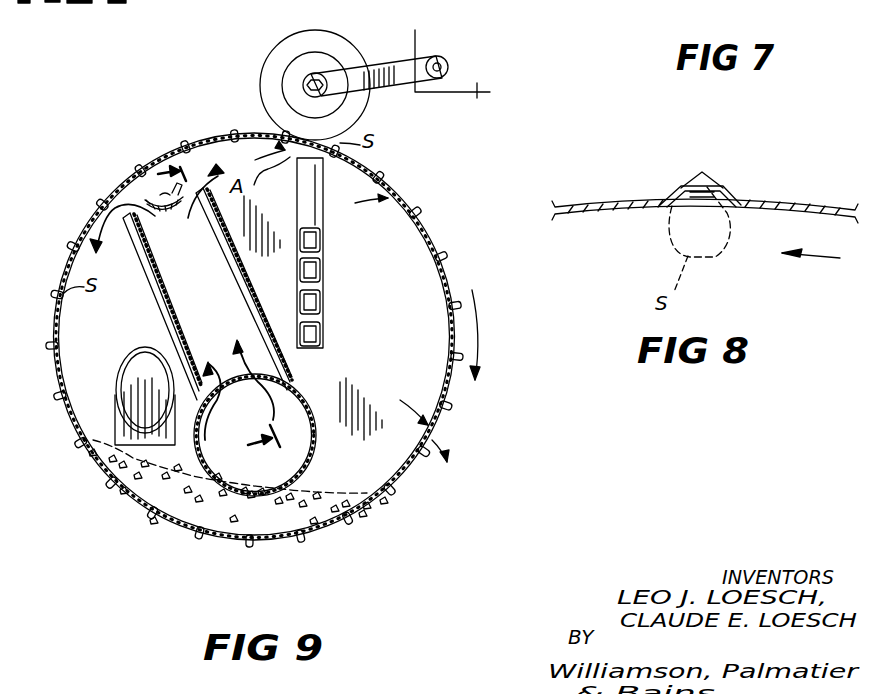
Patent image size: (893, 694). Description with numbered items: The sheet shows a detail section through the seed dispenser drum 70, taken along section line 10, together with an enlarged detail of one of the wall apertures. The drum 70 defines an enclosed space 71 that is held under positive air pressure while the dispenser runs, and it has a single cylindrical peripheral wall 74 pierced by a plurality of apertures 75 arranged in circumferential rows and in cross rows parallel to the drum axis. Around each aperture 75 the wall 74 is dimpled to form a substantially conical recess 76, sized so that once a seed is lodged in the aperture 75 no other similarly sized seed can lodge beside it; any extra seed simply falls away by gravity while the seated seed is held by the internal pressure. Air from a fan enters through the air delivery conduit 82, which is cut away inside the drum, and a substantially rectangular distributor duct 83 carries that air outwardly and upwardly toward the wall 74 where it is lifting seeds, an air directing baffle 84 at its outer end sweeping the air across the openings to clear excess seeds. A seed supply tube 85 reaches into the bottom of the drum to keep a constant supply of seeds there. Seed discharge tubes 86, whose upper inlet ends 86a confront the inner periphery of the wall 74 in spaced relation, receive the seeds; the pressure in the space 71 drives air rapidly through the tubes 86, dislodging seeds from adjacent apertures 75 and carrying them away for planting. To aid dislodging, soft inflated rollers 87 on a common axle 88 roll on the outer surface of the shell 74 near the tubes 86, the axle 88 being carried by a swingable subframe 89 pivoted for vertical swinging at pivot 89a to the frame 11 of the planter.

In FIG. 9, the section line 10 is at (233, 303).
In FIG. 9, the frame 11 is at (477, 102).
In FIG. 9, the dispenser drum 70 is at (86, 171).
In FIG. 9, the enclosed space 71 is at (404, 362).
In FIG. 9, the peripheral wall 74 is at (440, 410).
In FIG. 8, the peripheral wall 74 is at (810, 208).
In FIG. 9, the apertures 75 is at (112, 483).
In FIG. 8, the apertures 75 is at (700, 186).
In FIG. 8, the recess 76 is at (686, 200).
In FIG. 9, the air delivery conduit 82 is at (314, 470).
In FIG. 9, the distributor duct 83 is at (207, 294).
In FIG. 9, the air directing baffle 84 is at (175, 206).
In FIG. 9, the seed supply tube 85 is at (124, 358).
In FIG. 9, the seed discharge tubes 86 is at (329, 332).
In FIG. 9, the upper inlet ends 86a is at (314, 187).
In FIG. 9, the inflated rollers 87 is at (266, 64).
In FIG. 9, the axle 88 is at (313, 75).
In FIG. 9, the swingable subframe 89 is at (389, 68).
In FIG. 9, the pivot 89a is at (439, 78).